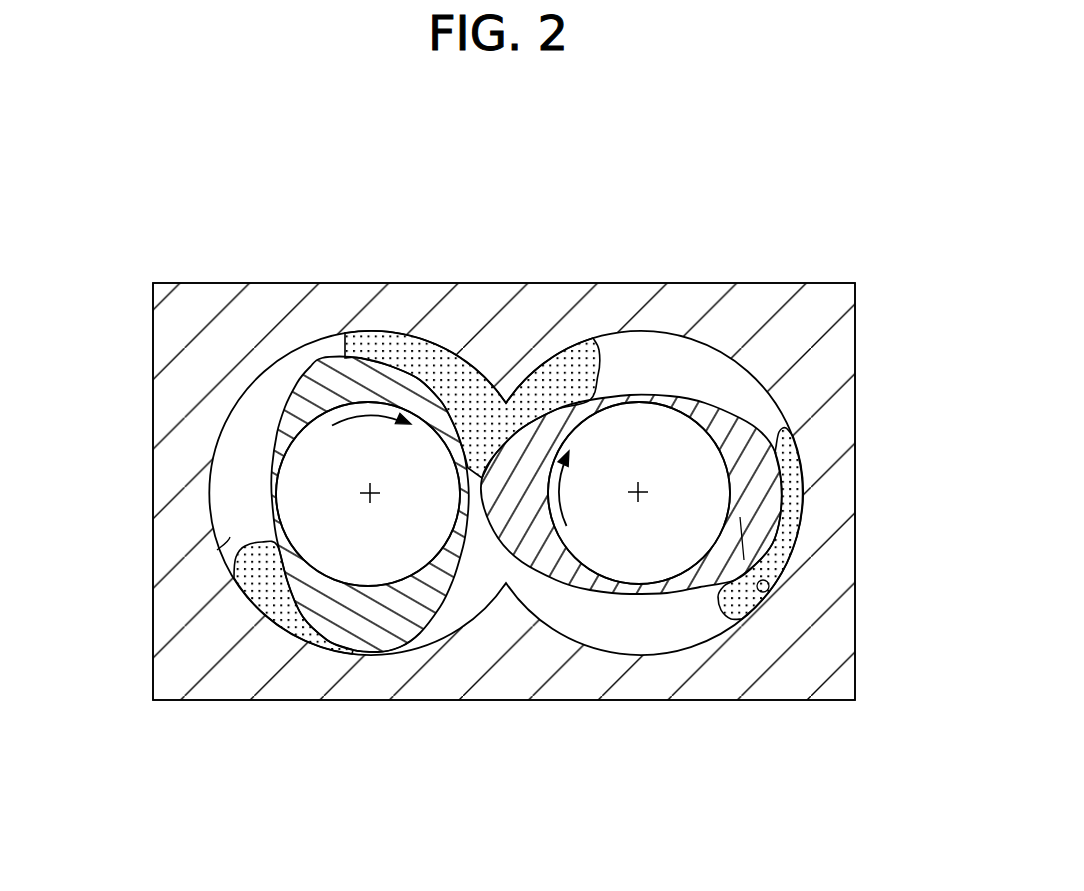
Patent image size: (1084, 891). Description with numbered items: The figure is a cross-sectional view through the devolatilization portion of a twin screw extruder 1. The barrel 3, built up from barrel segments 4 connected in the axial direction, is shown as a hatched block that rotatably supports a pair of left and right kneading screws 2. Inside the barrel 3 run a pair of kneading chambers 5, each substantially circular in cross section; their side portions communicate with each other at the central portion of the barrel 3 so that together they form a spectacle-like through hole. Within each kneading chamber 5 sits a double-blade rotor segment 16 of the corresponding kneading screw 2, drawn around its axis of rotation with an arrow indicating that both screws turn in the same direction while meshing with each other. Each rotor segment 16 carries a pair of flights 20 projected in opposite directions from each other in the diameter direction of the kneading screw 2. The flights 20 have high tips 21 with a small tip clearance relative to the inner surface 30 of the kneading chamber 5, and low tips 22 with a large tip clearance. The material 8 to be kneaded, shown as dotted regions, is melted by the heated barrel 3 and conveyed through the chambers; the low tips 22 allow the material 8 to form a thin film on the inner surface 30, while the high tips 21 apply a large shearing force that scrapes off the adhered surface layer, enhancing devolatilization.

The twin screw extruder 1 is at (688, 216).
The kneading screw 2 is at (496, 470).
The barrel 3 is at (504, 453).
The barrel segment 4 is at (782, 283).
The kneading chamber 5 is at (652, 368).
The material to be kneaded 8 is at (560, 365).
The double-blade rotor segment 16 is at (269, 470).
The flight 20 is at (383, 378).
The high tip 21 is at (455, 515).
The low tip 22 is at (334, 355).
The inner surface 30 is at (217, 550).